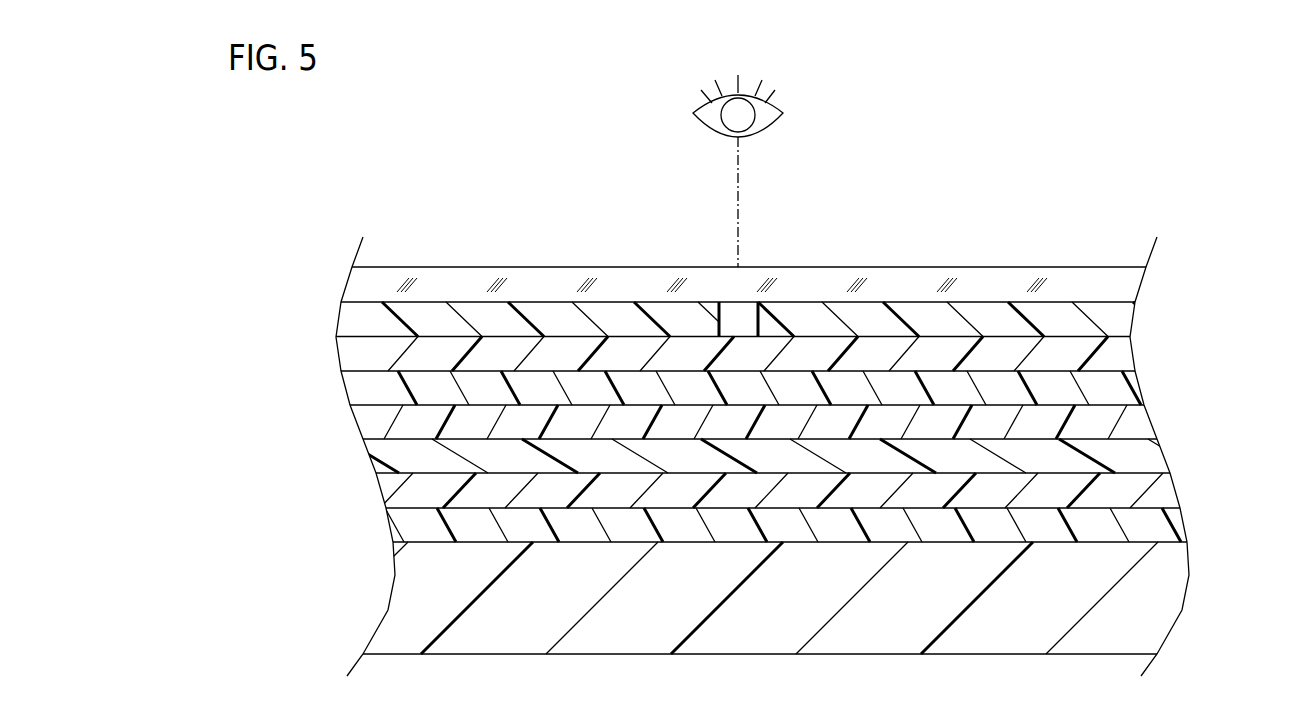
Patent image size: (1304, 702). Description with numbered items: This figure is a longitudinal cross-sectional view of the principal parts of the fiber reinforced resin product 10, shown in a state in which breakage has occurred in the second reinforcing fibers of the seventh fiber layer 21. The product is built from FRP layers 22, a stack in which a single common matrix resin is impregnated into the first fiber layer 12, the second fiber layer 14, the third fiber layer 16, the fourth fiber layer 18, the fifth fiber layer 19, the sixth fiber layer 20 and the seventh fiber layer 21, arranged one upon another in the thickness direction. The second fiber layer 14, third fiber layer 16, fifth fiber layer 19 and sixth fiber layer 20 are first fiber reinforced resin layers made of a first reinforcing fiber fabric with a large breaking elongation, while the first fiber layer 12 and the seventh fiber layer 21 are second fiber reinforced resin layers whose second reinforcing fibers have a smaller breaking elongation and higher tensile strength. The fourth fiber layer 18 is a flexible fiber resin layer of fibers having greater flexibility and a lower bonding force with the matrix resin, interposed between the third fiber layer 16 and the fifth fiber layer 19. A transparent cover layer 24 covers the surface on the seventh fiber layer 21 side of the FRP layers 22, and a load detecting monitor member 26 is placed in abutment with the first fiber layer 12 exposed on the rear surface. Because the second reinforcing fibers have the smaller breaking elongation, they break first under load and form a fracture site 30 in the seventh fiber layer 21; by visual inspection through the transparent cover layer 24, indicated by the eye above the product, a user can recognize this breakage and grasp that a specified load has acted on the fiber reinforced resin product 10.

The fiber reinforced resin product 10 is at (1031, 251).
The first fiber layer 12 is at (1153, 530).
The second fiber layer 14 is at (1153, 497).
The third fiber layer 16 is at (1133, 458).
The fourth fiber layer 18 is at (1117, 427).
The fifth fiber layer 19 is at (1117, 392).
The sixth fiber layer 20 is at (1118, 357).
The seventh fiber layer 21 is at (1122, 323).
The FRP layers 22 is at (1232, 305).
The transparent cover layer 24 is at (1113, 287).
The load detecting monitor member 26 is at (1153, 598).
The fracture site 30 is at (730, 313).